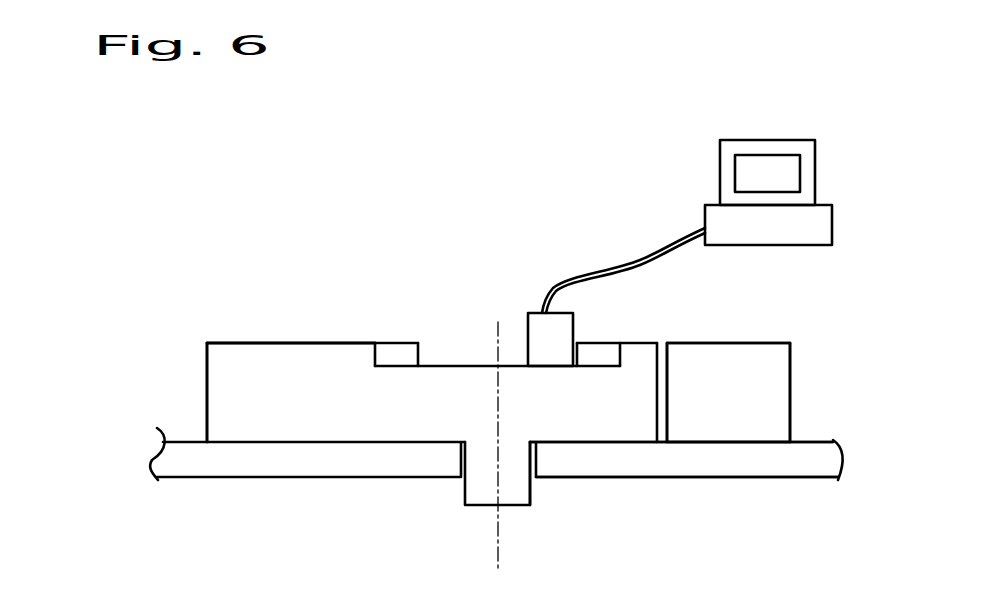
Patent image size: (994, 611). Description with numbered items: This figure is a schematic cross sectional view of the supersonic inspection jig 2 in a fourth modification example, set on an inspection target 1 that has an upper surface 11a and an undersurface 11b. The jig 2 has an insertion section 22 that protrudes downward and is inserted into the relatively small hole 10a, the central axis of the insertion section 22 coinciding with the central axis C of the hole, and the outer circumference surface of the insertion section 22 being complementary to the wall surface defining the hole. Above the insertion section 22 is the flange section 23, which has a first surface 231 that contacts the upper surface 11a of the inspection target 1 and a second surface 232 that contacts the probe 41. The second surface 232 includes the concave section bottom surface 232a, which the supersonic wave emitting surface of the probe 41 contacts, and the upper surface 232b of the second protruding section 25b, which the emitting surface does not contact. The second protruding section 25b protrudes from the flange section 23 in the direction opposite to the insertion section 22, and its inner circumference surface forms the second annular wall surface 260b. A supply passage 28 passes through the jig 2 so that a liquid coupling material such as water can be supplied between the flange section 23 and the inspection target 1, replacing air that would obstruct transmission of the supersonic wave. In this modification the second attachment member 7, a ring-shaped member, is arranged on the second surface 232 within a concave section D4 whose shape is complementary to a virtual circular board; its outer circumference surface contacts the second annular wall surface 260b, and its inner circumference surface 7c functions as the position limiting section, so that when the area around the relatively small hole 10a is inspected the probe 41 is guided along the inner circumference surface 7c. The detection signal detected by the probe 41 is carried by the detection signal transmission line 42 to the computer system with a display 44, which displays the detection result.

The inspection target 1 is at (742, 463).
The upper surface of the inspection target 11a is at (818, 441).
The undersurface of the inspection target 11b is at (787, 478).
The first surface 231 is at (275, 445).
The insertion section 22 is at (482, 499).
The relatively small hole 10a is at (536, 479).
The second surface 232 is at (95, 342).
The concave section bottom surface 232a is at (395, 368).
The upper surface of the second protruding section 232b is at (232, 343).
The second annular wall surface 260b is at (395, 342).
The second attachment member 7 is at (614, 347).
The inner circumference surface 7c is at (378, 358).
The concave section D4 is at (462, 358).
The central axis C is at (498, 430).
The supply passage 28 is at (662, 437).
The supersonic inspection jig 2 is at (783, 368).
The flange section 23 is at (783, 403).
The second protruding section 25b is at (737, 350).
The probe 41 is at (567, 325).
The detection signal transmission line 42 is at (646, 253).
The computer system with a display 44 is at (773, 145).